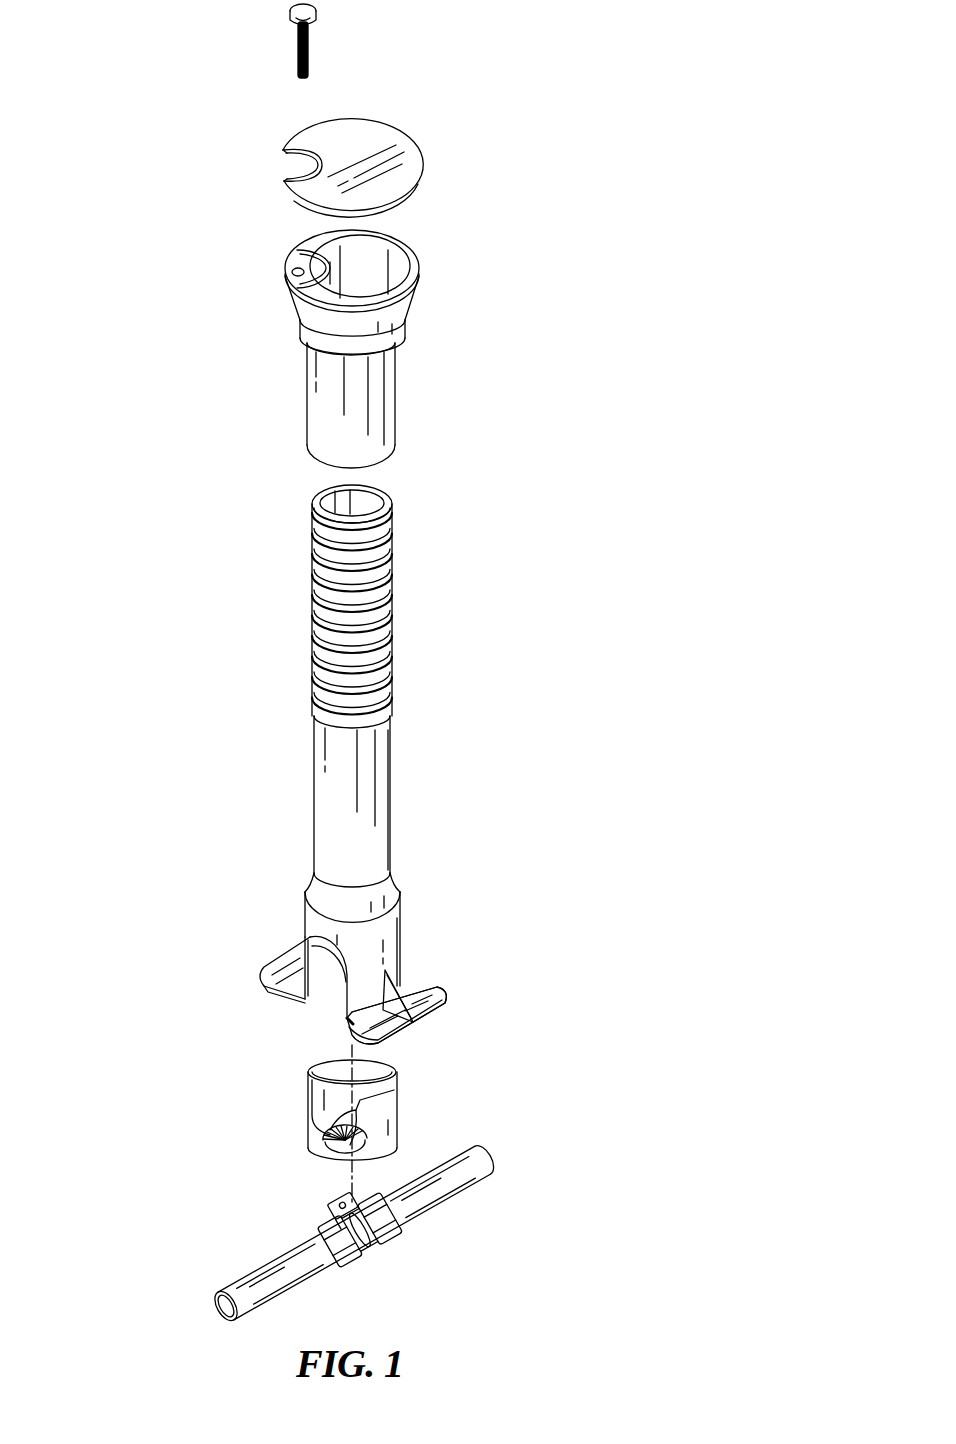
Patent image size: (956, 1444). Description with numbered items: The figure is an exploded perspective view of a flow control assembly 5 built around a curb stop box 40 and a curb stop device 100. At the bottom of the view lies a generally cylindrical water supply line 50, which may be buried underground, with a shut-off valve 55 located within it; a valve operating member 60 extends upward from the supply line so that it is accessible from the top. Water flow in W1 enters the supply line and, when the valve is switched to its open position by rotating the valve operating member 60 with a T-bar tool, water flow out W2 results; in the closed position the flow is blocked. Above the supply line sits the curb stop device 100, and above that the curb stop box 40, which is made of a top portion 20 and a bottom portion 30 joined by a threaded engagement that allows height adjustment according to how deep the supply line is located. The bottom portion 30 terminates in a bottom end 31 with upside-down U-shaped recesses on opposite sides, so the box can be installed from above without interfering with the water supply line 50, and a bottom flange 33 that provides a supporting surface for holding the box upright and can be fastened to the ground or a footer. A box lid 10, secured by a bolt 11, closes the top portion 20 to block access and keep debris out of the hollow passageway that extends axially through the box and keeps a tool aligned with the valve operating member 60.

The flow control assembly 5 is at (124, 374).
The box lid 10 is at (415, 160).
The bolt 11 is at (316, 16).
The top portion 20 is at (388, 384).
The bottom portion 30 is at (373, 848).
The bottom end 31 is at (397, 950).
The bottom flange 33 is at (432, 1012).
The curb stop box 40 is at (560, 226).
The water supply line 50 is at (458, 1183).
The shut-off valve 55 is at (370, 1248).
The valve operating member 60 is at (338, 1215).
The curb stop device 100 is at (296, 1108).
The water flow in W1 is at (520, 1128).
The water flow out W2 is at (226, 1303).